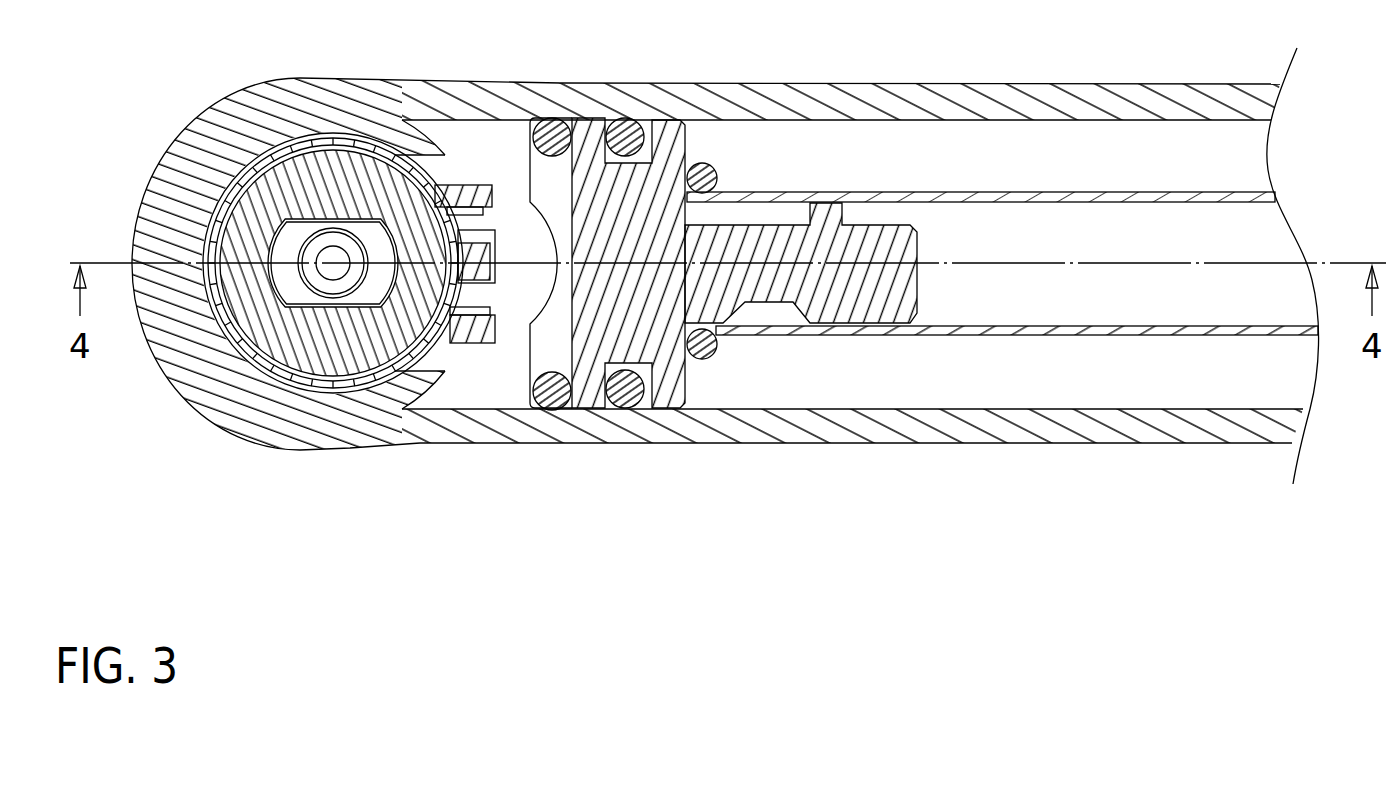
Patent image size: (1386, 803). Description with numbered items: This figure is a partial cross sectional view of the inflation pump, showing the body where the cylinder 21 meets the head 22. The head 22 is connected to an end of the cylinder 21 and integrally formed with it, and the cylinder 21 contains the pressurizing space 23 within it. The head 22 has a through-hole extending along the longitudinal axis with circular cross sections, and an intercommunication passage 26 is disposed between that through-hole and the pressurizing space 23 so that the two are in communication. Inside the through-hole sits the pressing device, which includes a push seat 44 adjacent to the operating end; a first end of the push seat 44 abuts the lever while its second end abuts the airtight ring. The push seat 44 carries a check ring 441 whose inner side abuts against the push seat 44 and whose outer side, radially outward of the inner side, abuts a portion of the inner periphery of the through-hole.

The cylinder 21 is at (743, 424).
The head 22 is at (173, 192).
The pressurizing space 23 is at (832, 398).
The intercommunication passage 26 is at (528, 218).
The push seat 44 is at (258, 195).
The check ring 441 is at (418, 158).